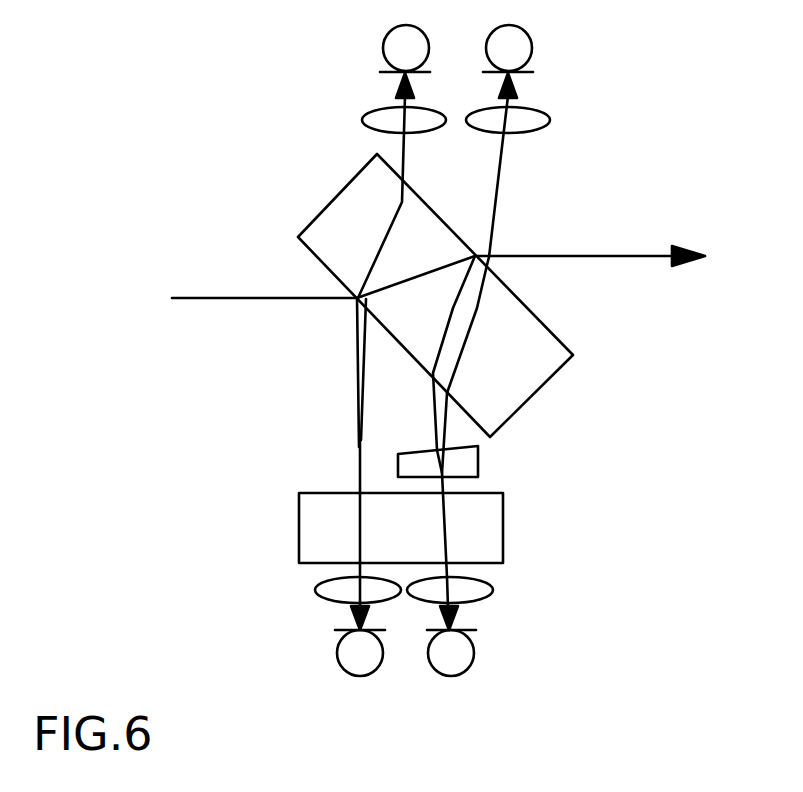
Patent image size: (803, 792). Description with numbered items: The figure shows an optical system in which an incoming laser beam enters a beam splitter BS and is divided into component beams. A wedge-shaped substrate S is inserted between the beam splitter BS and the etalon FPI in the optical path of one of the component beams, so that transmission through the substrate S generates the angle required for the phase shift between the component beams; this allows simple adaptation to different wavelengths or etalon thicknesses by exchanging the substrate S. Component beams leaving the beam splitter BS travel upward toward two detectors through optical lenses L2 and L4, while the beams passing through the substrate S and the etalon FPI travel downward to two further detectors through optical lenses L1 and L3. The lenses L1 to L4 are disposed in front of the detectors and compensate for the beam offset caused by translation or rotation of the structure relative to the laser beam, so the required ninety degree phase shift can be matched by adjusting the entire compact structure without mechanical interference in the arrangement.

The optical lens L1 is at (339, 594).
The optical lens L2 is at (383, 122).
The optical lens L3 is at (472, 594).
The optical lens L4 is at (532, 122).
The beam splitter BS is at (445, 295).
The wedge-shaped substrate S is at (459, 463).
The etalon FPI is at (434, 528).